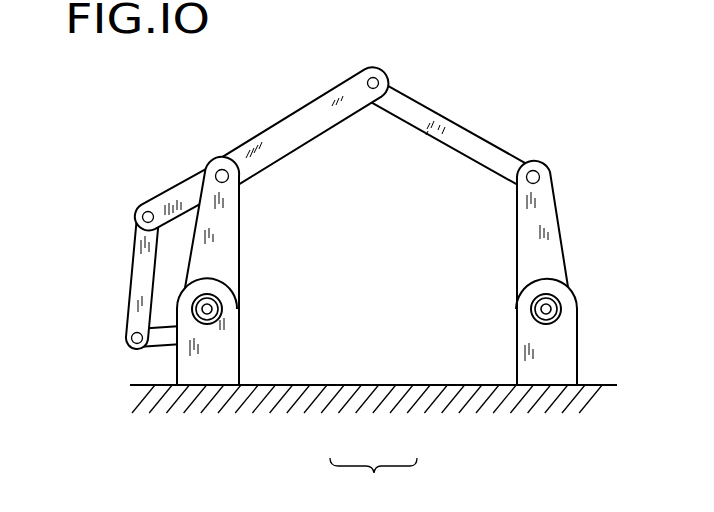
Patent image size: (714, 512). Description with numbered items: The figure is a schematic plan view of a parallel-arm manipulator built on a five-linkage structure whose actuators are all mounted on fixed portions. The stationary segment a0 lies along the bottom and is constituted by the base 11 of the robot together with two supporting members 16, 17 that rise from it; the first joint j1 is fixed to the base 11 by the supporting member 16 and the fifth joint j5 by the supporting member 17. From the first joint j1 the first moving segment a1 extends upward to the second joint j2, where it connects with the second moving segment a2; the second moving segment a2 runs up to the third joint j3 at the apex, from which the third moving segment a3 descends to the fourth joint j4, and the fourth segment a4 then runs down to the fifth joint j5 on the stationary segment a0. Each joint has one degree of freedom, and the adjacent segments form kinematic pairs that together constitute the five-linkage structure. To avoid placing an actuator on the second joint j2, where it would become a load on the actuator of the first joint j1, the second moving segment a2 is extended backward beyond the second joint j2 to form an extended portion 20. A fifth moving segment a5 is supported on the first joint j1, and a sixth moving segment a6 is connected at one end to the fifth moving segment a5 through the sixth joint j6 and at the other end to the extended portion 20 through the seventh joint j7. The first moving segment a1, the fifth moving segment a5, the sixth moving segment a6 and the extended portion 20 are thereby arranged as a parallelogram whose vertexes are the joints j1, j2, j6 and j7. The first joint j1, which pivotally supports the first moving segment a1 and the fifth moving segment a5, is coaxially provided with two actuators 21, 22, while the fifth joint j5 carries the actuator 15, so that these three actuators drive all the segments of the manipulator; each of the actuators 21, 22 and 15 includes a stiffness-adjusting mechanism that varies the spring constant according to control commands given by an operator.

The extended portion 20 is at (180, 192).
The stationary segment a0 is at (373, 478).
The first moving segment a1 is at (234, 233).
The second moving segment a2 is at (262, 137).
The third moving segment a3 is at (483, 130).
The fourth segment a4 is at (548, 232).
The fifth moving segment a5 is at (163, 350).
The sixth moving segment a6 is at (140, 292).
The first joint j1 is at (210, 314).
The second joint j2 is at (242, 184).
The third joint j3 is at (368, 80).
The fourth joint j4 is at (541, 182).
The fifth joint j5 is at (553, 311).
The sixth joint j6 is at (130, 348).
The seventh joint j7 is at (140, 218).
The base 11 is at (370, 392).
The actuator 15 is at (578, 324).
The supporting member 16 is at (219, 370).
The supporting member 17 is at (543, 372).
The actuator 21 is at (273, 321).
The actuator 22 is at (207, 309).